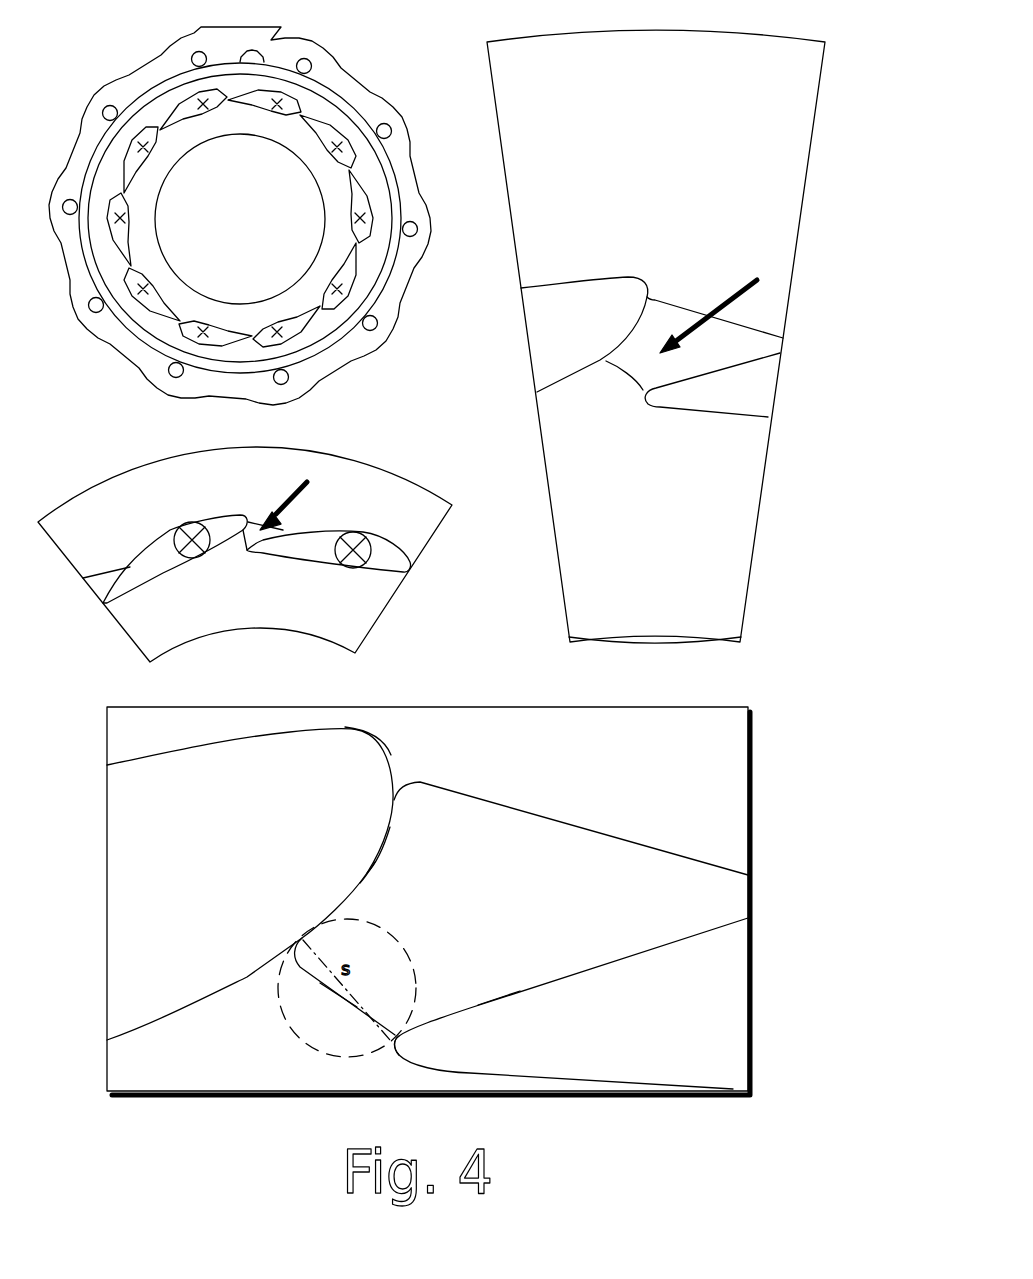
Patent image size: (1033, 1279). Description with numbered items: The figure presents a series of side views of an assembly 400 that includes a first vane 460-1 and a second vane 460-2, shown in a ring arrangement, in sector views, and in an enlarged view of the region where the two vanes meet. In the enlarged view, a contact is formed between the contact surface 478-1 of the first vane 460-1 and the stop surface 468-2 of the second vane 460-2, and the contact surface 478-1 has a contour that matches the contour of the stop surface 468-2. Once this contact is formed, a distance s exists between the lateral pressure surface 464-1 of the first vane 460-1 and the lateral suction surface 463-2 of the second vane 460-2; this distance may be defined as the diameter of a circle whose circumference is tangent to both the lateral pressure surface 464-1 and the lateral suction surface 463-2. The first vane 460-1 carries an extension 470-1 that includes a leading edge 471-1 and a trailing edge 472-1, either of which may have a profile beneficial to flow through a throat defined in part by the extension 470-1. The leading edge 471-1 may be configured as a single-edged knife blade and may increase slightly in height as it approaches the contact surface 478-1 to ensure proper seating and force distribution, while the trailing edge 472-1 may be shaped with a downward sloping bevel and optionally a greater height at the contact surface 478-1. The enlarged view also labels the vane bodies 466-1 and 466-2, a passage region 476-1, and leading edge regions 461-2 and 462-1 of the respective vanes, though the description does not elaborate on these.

The assembly 400 is at (152, 46).
The first vane 460-1 is at (252, 107).
The second vane 460-2 is at (192, 118).
The extension 470-1 is at (683, 310).
The leading edge of second vane 461-2 is at (387, 750).
The leading edge 471-1 is at (535, 815).
The second vane body 466-2 is at (222, 881).
The stop surface 468-2 is at (418, 891).
The contact surface 478-1 is at (421, 882).
The flow passage between vanes 476-1 is at (530, 939).
The lateral suction surface 463-2 is at (247, 977).
The trailing edge 472-1 is at (340, 998).
The lateral pressure surface 464-1 is at (478, 1005).
The first vane body 466-1 is at (683, 1032).
The leading edge of first vane 462-1 is at (395, 1050).